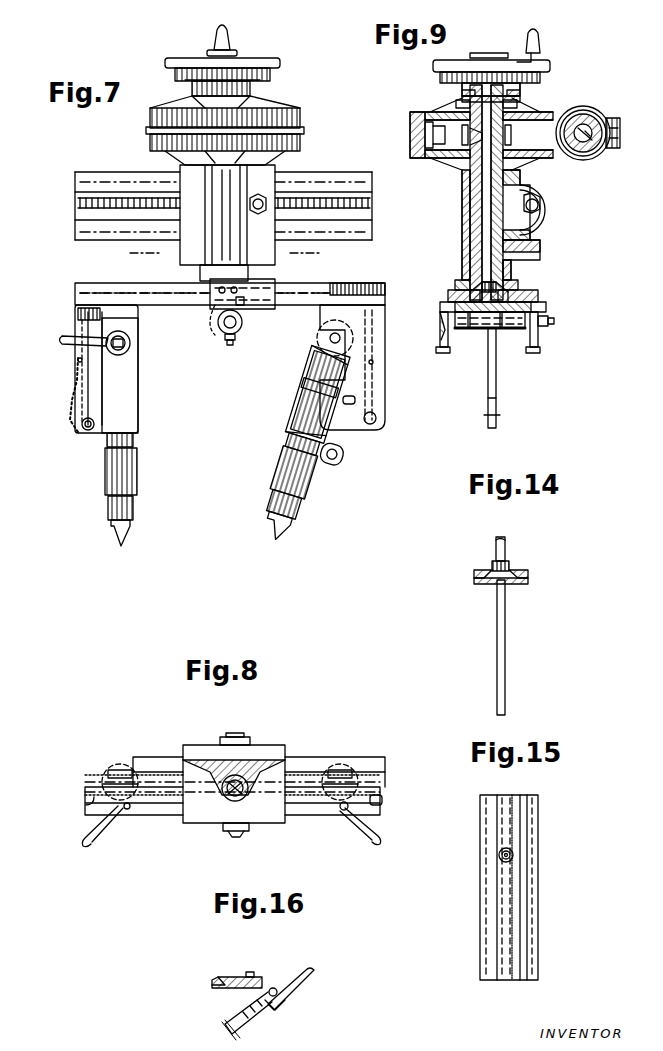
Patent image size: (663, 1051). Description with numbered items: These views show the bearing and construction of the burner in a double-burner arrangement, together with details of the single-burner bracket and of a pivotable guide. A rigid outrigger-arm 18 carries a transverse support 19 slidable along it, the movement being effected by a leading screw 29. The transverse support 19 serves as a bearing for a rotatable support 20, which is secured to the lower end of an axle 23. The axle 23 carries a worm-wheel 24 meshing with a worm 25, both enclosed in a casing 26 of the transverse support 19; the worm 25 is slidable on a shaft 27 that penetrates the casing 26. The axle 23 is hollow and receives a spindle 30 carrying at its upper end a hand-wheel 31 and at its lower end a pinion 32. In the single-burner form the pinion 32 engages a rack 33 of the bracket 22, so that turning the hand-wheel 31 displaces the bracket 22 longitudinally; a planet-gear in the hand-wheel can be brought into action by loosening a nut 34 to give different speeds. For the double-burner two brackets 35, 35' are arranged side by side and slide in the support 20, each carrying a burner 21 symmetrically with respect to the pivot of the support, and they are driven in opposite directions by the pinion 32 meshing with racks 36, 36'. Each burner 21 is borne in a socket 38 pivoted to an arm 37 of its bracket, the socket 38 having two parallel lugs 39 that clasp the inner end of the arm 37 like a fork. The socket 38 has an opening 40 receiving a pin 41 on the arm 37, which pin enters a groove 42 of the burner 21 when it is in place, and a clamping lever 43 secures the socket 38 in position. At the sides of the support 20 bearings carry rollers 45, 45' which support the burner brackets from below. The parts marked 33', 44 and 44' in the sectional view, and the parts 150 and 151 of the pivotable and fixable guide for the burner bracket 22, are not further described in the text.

In FIG. 7, the outrigger-arm 18 is at (322, 185).
In FIG. 9, the outrigger-arm 18 is at (543, 228).
In FIG. 7, the transverse support 19 is at (178, 262).
In FIG. 9, the transverse support 19 is at (466, 225).
In FIG. 8, the transverse support 19 is at (198, 760).
In FIG. 7, the rotatable support 20 is at (258, 303).
In FIG. 9, the rotatable support 20 is at (538, 288).
In FIG. 8, the rotatable support 20 is at (284, 822).
In FIG. 7, the burner 21 is at (138, 473).
In FIG. 14, the bracket 22 is at (490, 585).
In FIG. 15, the bracket 22 is at (484, 938).
In FIG. 9, the axle 23 is at (478, 175).
In FIG. 8, the axle 23 is at (226, 800).
In FIG. 9, the worm-wheel 24 is at (432, 150).
In FIG. 9, the worm 25 is at (603, 158).
In FIG. 7, the casing 26 is at (300, 117).
In FIG. 9, the casing 26 is at (425, 118).
In FIG. 9, the shaft 27 is at (586, 124).
In FIG. 7, the leading screw 29 is at (372, 203).
In FIG. 9, the leading screw 29 is at (542, 200).
In FIG. 9, the spindle 30 is at (497, 165).
In FIG. 8, the spindle 30 is at (248, 800).
In FIG. 7, the hand-wheel 31 is at (281, 63).
In FIG. 9, the hand-wheel 31 is at (549, 66).
In FIG. 9, the pinion 32 is at (450, 296).
In FIG. 14, the pinion 32 is at (510, 565).
In FIG. 15, the pinion 32 is at (514, 858).
In FIG. 14, the rack 33 is at (534, 567).
In FIG. 15, the rack 33 is at (541, 820).
In FIG. 9, the groove 33' is at (518, 342).
In FIG. 7, the nut 34 is at (230, 52).
In FIG. 9, the nut 34 is at (490, 53).
In FIG. 7, the bracket 35 is at (145, 275).
In FIG. 9, the bracket 35 is at (490, 340).
In FIG. 8, the bracket 35 is at (232, 807).
In FIG. 7, the bracket 35' is at (304, 313).
In FIG. 8, the bracket 35' is at (357, 746).
In FIG. 9, the rack 36 is at (455, 274).
In FIG. 8, the rack 36 is at (259, 796).
In FIG. 7, the rack 36' is at (357, 277).
In FIG. 9, the rack 36' is at (522, 274).
In FIG. 8, the rack 36' is at (402, 770).
In FIG. 7, the arm 37 is at (80, 395).
In FIG. 9, the arm 37 is at (497, 390).
In FIG. 14, the arm 37 is at (506, 628).
In FIG. 7, the socket 38 is at (130, 395).
In FIG. 8, the socket 38 is at (122, 770).
In FIG. 7, the lugs 39 is at (92, 432).
In FIG. 8, the lugs 39 is at (386, 795).
In FIG. 7, the opening 40 is at (325, 395).
In FIG. 7, the pin 41 is at (358, 400).
In FIG. 7, the groove 42 is at (317, 391).
In FIG. 7, the clamping lever 43 is at (68, 345).
In FIG. 8, the clamping lever 43 is at (92, 845).
In FIG. 7, the clamp bolt 44 is at (204, 320).
In FIG. 9, the clamp bolt 44 is at (435, 335).
In FIG. 8, the clamp bolt 44 is at (247, 787).
In FIG. 9, the clamp bolt 44' is at (547, 332).
In FIG. 7, the roller 45 is at (220, 332).
In FIG. 9, the roller 45 is at (465, 353).
In FIG. 9, the roller 45' is at (504, 339).
In FIG. 16, the bar 150 is at (220, 990).
In FIG. 16, the lever 151 is at (218, 1020).